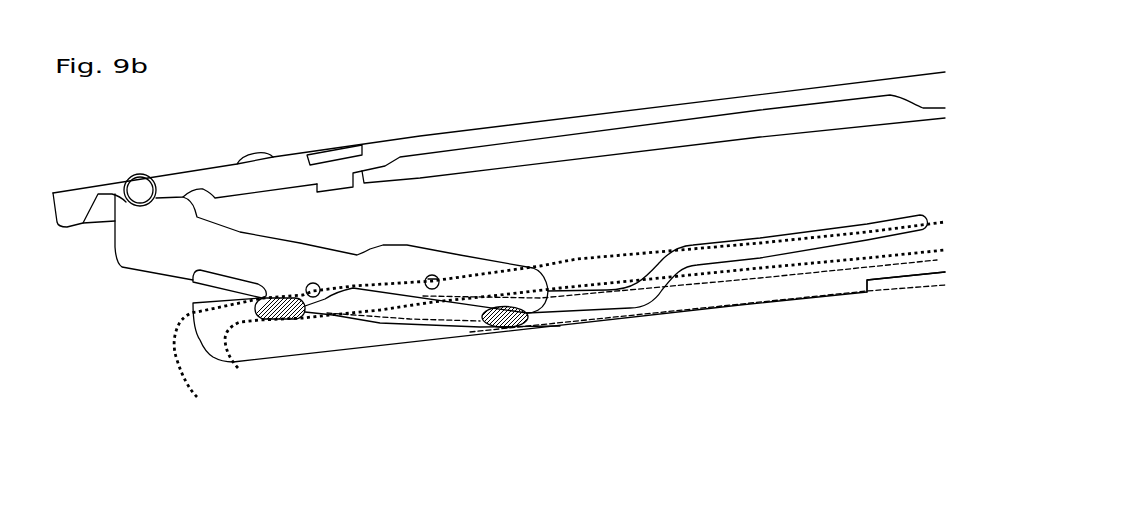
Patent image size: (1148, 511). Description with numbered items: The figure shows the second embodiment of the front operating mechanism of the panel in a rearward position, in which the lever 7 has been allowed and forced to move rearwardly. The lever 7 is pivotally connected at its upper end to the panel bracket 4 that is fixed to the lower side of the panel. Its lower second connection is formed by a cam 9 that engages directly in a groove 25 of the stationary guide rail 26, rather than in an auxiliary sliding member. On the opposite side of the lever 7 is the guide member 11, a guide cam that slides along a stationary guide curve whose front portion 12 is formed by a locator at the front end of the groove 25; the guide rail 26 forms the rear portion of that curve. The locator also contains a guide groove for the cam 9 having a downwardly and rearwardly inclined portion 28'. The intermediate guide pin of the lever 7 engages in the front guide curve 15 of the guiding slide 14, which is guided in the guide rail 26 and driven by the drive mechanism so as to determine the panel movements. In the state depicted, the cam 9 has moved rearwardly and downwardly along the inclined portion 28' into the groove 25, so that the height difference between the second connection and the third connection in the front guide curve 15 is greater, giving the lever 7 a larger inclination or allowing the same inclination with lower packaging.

The panel bracket 4 is at (535, 138).
The lever 7 is at (137, 260).
The cam 9 is at (523, 330).
The guide member 11 is at (278, 318).
The front portion of the stationary guide curve 12 is at (190, 353).
The guiding slide 14 is at (712, 316).
The front guide curve 15 is at (600, 300).
The groove 25 is at (883, 287).
The stationary guide rail 26 is at (935, 304).
The downwardly and rearwardly inclined portion 28' is at (403, 379).